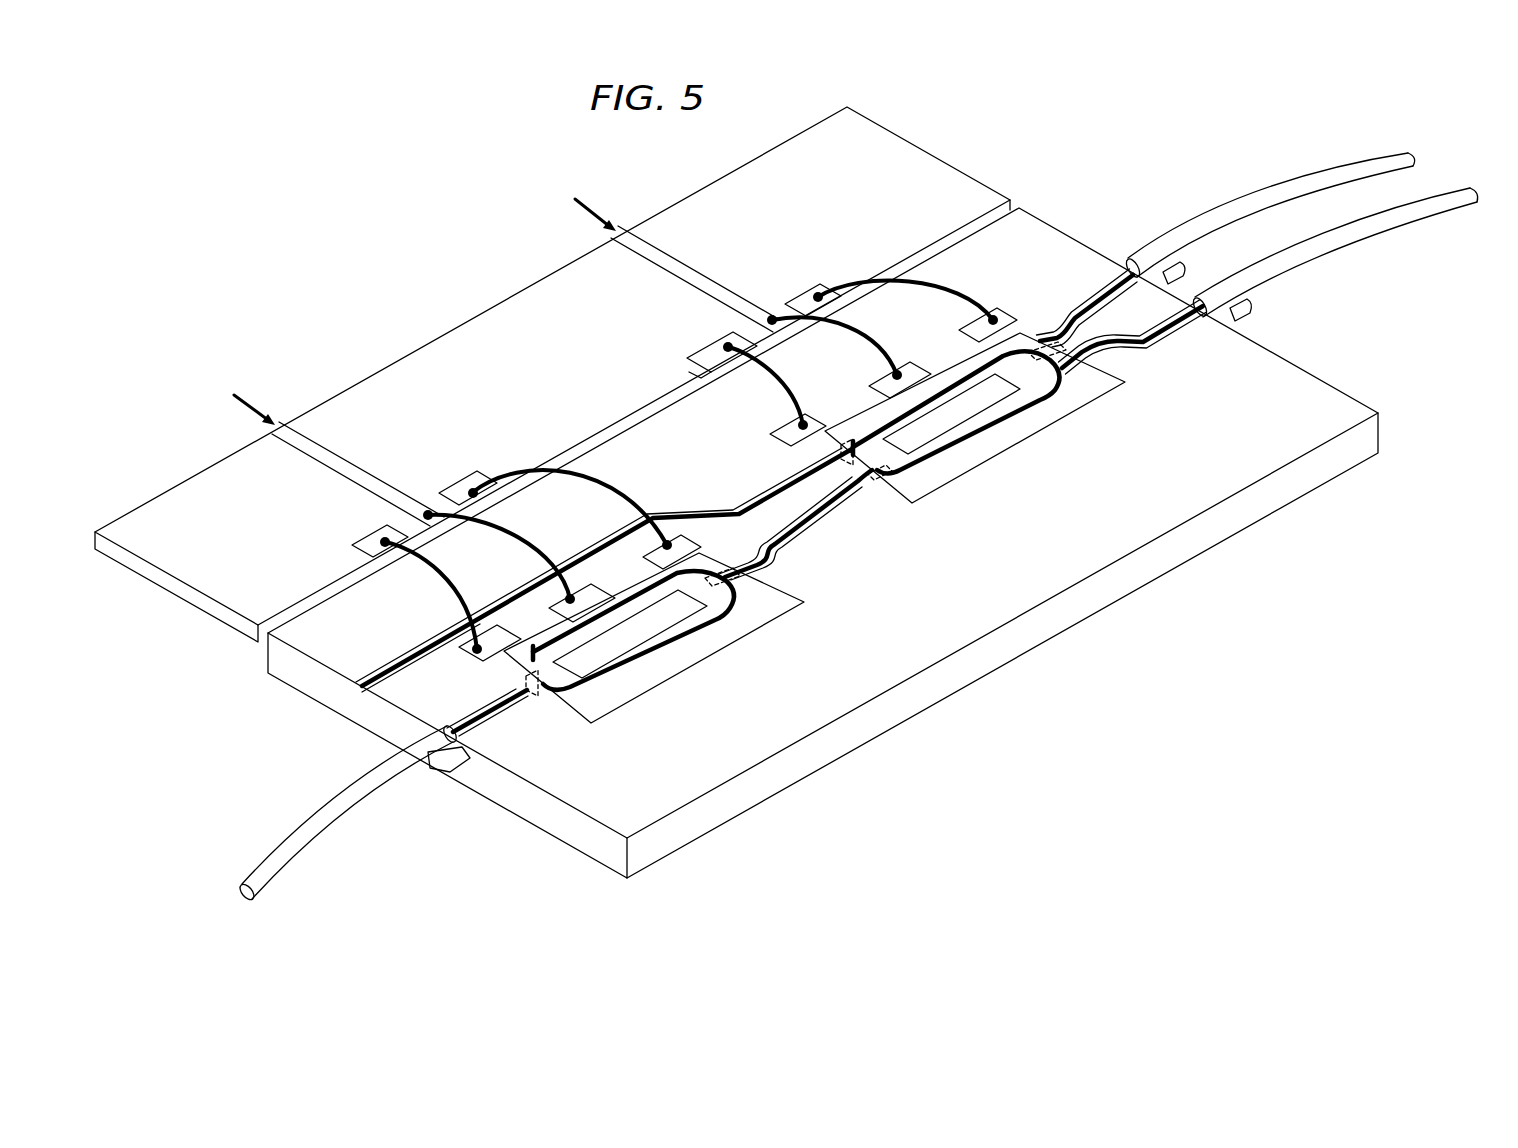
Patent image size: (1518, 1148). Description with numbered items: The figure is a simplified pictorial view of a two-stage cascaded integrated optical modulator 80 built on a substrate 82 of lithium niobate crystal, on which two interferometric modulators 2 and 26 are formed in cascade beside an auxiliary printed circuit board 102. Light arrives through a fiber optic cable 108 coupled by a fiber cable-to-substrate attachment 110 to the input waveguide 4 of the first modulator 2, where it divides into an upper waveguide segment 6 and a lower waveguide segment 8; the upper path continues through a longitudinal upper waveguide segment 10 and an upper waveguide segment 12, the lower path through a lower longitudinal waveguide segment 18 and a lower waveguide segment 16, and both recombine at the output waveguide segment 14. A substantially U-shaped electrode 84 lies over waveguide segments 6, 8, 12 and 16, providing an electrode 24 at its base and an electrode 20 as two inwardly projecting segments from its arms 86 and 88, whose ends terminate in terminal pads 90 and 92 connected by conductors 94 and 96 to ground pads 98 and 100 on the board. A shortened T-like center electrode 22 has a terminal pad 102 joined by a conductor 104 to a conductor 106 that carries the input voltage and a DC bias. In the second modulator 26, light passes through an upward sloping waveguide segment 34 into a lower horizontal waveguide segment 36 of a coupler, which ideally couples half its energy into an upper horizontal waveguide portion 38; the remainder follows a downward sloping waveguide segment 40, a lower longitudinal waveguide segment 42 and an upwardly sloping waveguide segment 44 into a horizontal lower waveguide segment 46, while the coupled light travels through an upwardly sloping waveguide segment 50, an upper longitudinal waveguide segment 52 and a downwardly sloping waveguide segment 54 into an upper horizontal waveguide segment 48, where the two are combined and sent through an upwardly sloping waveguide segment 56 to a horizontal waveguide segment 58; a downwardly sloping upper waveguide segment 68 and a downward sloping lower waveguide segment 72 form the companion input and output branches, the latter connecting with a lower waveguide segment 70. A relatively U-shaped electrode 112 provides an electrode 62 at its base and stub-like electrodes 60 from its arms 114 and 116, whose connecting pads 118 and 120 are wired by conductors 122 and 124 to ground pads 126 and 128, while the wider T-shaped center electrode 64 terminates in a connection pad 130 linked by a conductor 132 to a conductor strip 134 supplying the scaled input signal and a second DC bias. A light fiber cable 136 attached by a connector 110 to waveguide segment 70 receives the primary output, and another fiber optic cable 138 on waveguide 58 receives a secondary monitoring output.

The Y-branch electro-optical interferometric modulator 2 is at (706, 683).
The input waveguide 4 is at (498, 712).
The upper waveguide segment 6 is at (520, 665).
The lower waveguide segment 8 is at (580, 657).
The longitudinal upper waveguide segment 10 is at (607, 590).
The upper waveguide segment 12 is at (708, 568).
The output waveguide segment 14 is at (758, 570).
The lower waveguide segment 16 is at (752, 617).
The lower longitudinal waveguide segment 18 is at (715, 630).
The electrode 20 is at (637, 527).
The center electrode 22 is at (582, 662).
The electrode 24 is at (638, 693).
The Mach-Zehnder interferometric modulator 26 is at (1075, 435).
The upward sloping waveguide segment 34 is at (777, 543).
The lower horizontal waveguide segment 36 is at (862, 492).
The upper horizontal waveguide portion 38 is at (785, 490).
The downward sloping waveguide segment 40 is at (893, 490).
The lower longitudinal waveguide segment 42 is at (930, 482).
The upwardly sloping waveguide segment 44 is at (1075, 380).
The horizontal lower waveguide segment 46 is at (1105, 357).
The upper horizontal waveguide segment 48 is at (1038, 345).
The upwardly sloping waveguide segment 50 is at (873, 424).
The upper longitudinal waveguide segment 52 is at (1027, 372).
The downwardly sloping waveguide segment 54 is at (1020, 352).
The upwardly sloping waveguide segment 56 is at (1073, 307).
The horizontal waveguide segment 58 is at (1110, 273).
The electrode 60 is at (950, 348).
The electrode 62 is at (980, 457).
The center electrode 64 is at (980, 407).
The downwardly sloping upper waveguide segment 68 is at (703, 517).
The lower waveguide segment 70 is at (1190, 328).
The downward sloping lower waveguide segment 72 is at (1137, 350).
The two-stage cascaded integrated optical modulator 80 is at (875, 543).
The substrate 82 is at (823, 543).
The U-shaped electrode 84 is at (778, 610).
The arm 86 is at (687, 550).
The arm 88 is at (487, 662).
The terminal pad 90 is at (660, 507).
The terminal pad 92 is at (447, 636).
The conductor 94 is at (580, 478).
The conductor 96 is at (433, 575).
The ground pad 98 is at (357, 545).
The ground pad 100 is at (458, 478).
The auxiliary printed circuit board 102 is at (948, 160).
The conductor 104 is at (518, 535).
The conductor 106 is at (373, 482).
The fiber optic cable 108 is at (290, 830).
The fiber cable-to-substrate attachment 110 is at (437, 772).
The U-shaped electrode 112 is at (973, 473).
The electrode arm 114 is at (1005, 318).
The electrode arm 116 is at (790, 433).
The connecting pad 118 is at (990, 318).
The connecting pad 120 is at (795, 425).
The conductor 122 is at (923, 278).
The conductor 124 is at (712, 362).
The ground pad 126 is at (820, 278).
The ground pad 128 is at (710, 342).
The connection pad 130 is at (912, 372).
The conductor 132 is at (781, 315).
The conductor strip 134 is at (693, 263).
The light fiber cable 136 is at (1340, 243).
The fiber optic cable 138 is at (1325, 182).